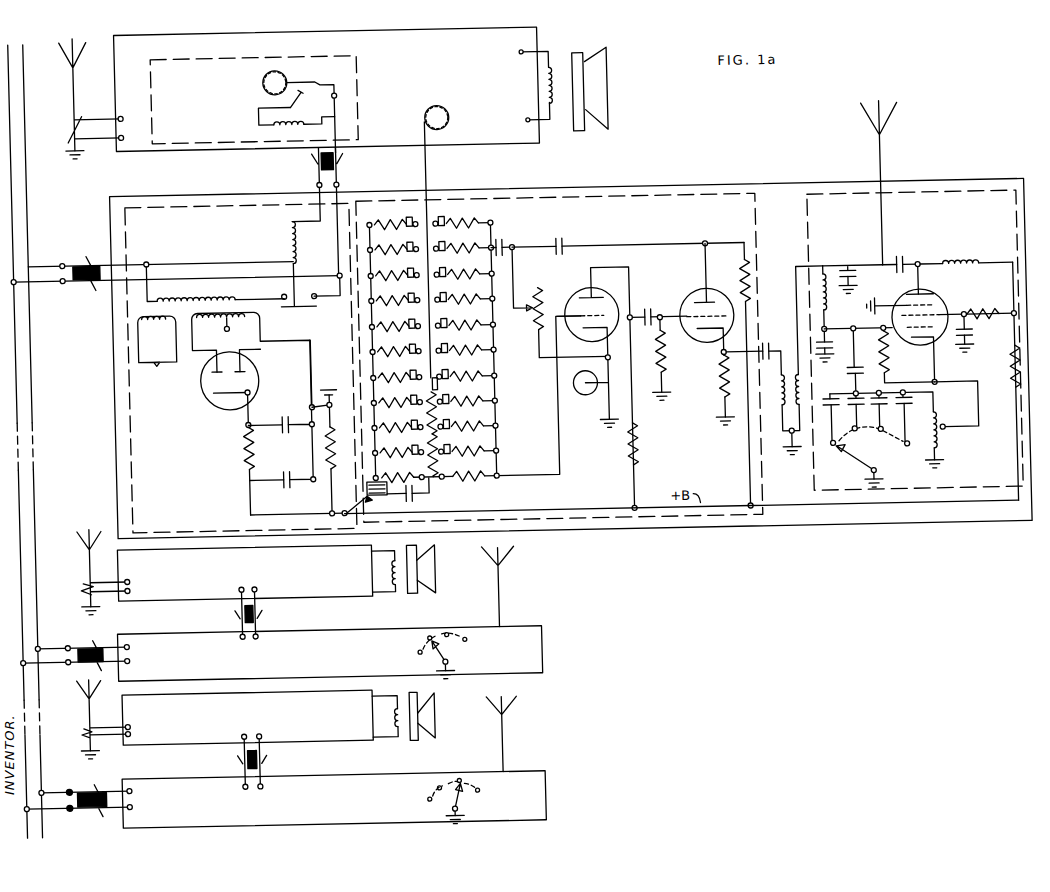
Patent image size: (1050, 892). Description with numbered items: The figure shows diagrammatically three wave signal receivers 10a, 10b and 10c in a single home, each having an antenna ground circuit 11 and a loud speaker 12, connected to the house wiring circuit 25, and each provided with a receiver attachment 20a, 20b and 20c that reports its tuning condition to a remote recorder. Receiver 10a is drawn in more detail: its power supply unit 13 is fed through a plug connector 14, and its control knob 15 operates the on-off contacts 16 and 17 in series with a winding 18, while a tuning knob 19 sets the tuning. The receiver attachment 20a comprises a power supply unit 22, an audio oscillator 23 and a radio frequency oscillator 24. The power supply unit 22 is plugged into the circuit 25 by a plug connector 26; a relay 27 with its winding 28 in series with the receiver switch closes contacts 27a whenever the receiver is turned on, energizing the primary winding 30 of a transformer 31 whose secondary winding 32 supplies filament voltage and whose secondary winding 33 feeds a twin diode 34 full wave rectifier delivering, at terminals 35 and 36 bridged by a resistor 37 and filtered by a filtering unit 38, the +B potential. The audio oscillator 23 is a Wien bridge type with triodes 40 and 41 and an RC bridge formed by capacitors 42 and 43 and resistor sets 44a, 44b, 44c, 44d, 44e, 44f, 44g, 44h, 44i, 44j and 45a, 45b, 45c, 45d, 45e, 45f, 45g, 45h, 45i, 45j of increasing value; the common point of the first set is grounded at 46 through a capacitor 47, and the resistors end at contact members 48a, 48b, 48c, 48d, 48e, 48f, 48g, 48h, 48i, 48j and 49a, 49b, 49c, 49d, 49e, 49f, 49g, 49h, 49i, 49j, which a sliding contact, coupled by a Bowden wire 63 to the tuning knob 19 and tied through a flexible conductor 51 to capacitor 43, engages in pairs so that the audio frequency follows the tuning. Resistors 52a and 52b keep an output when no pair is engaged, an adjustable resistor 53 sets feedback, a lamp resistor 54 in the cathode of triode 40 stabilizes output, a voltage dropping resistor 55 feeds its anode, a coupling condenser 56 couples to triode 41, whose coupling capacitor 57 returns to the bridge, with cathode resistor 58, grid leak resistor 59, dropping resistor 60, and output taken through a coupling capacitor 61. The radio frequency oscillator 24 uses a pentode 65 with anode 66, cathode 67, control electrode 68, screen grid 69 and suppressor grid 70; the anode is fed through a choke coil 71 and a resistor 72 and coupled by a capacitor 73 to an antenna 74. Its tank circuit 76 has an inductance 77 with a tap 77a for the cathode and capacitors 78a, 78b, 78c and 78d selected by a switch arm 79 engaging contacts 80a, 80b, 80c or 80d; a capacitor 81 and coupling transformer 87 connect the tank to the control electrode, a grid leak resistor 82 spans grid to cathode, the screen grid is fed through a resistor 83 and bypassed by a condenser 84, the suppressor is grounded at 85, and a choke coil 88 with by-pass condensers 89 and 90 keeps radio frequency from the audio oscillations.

The wave signal receiver 10a is at (536, 46).
The wave signal receiver 10b is at (116, 545).
The wave signal receiver 10c is at (115, 694).
The antenna ground circuit 11 is at (80, 128).
The loud speaker 12 is at (608, 50).
The power supply unit 13 is at (159, 58).
The plug connector 14 is at (346, 169).
The control knob 15 is at (274, 86).
The contact 16 is at (297, 77).
The contact 17 is at (308, 91).
The winding 18 is at (282, 120).
The tuning knob 19 is at (434, 121).
The receiver attachment 20a is at (673, 182).
The receiver attachment 20b is at (366, 634).
The receiver attachment 20c is at (372, 783).
The power supply unit 22 is at (116, 218).
The audio oscillator 23 is at (741, 186).
The oscillator 24 is at (911, 193).
The house wiring circuit 25 is at (19, 358).
The plug connector 26 is at (89, 280).
The relay 27 is at (294, 222).
The contacts 27a is at (318, 292).
The winding 28 is at (310, 245).
The primary winding 30 is at (239, 292).
The transformer 31 is at (149, 298).
The secondary winding 32 is at (160, 324).
The secondary winding 33 is at (234, 325).
The twin diode 34 is at (258, 377).
The terminal 35 is at (311, 402).
The terminal 36 is at (329, 508).
The resistor 37 is at (327, 446).
The filtering unit 38 is at (248, 474).
The triode 40 is at (595, 273).
The triode 41 is at (706, 267).
The capacitor 42 is at (514, 243).
The capacitor 43 is at (428, 491).
The resistor 44a is at (387, 220).
The resistor 44b is at (387, 245).
The resistor 44c is at (388, 271).
The resistor 44d is at (388, 296).
The resistor 44e is at (389, 322).
The resistor 44f is at (390, 347).
The resistor 44g is at (390, 373).
The resistor 44h is at (391, 398).
The resistor 44i is at (392, 423).
The resistor 44j is at (392, 448).
The resistor 45a is at (469, 219).
The resistor 45b is at (470, 244).
The resistor 45c is at (470, 270).
The resistor 45d is at (471, 295).
The resistor 45e is at (472, 321).
The resistor 45f is at (472, 346).
The resistor 45g is at (473, 372).
The resistor 45h is at (474, 397).
The resistor 45i is at (474, 422).
The resistor 45j is at (475, 447).
The ground 46 is at (350, 506).
The capacitor 47 is at (378, 498).
The contact member 48a is at (406, 219).
The contact member 48b is at (407, 244).
The contact member 48c is at (407, 270).
The contact member 48d is at (408, 295).
The contact member 48e is at (409, 321).
The contact member 48f is at (409, 346).
The contact member 48g is at (410, 372).
The contact member 48h is at (411, 397).
The contact member 48i is at (411, 422).
The contact member 48j is at (412, 447).
The contact member 49a is at (444, 218).
The contact member 49b is at (444, 243).
The contact member 49c is at (445, 269).
The contact member 49d is at (445, 294).
The contact member 49e is at (446, 320).
The contact member 49f is at (446, 345).
The contact member 49g is at (447, 371).
The contact member 49h is at (448, 396).
The contact member 49i is at (447, 421).
The contact member 49j is at (447, 446).
The flexible conductor 51 is at (437, 466).
The resistor 52a is at (413, 471).
The resistor 52b is at (510, 399).
The adjustable resistor 53 is at (543, 286).
The resistor 54 is at (585, 395).
The voltage dropping resistor 55 is at (638, 429).
The coupling condenser 56 is at (648, 316).
The coupling capacitor 57 is at (569, 242).
The resistor 58 is at (725, 385).
The resistor 59 is at (665, 369).
The voltage dropping resistor 60 is at (748, 275).
The coupling capacitor 61 is at (767, 348).
The Bowden wire 63 is at (432, 157).
The pentode 65 is at (925, 303).
The anode 66 is at (911, 300).
The cathode 67 is at (936, 377).
The control electrode 68 is at (946, 324).
The screen grid 69 is at (942, 322).
The suppressor grid 70 is at (908, 312).
The radio frequency choke coil 71 is at (964, 271).
The voltage dropping resistor 72 is at (1014, 360).
The coupling capacitor 73 is at (907, 271).
The antenna 74 is at (896, 142).
The tank circuit 76 is at (882, 435).
The inductance 77 is at (939, 420).
The tap 77a is at (945, 448).
The capacitor 78a is at (838, 417).
The capacitor 78b is at (862, 410).
The capacitor 78c is at (884, 411).
The capacitor 78d is at (909, 418).
The adjustable switch 79 is at (867, 480).
The contact 80a is at (826, 456).
The contact 80b is at (463, 653).
The contact 80c is at (474, 806).
The contact 80d is at (904, 455).
The capacitor 81 is at (861, 359).
The grid leak resistor 82 is at (890, 367).
The voltage dropping resistor 83 is at (994, 322).
The by-pass condenser 84 is at (973, 343).
The ground 85 is at (858, 308).
The coupling transformer 87 is at (784, 373).
The radio frequency choke coil 88 is at (826, 272).
The by pass condenser 89 is at (854, 278).
The by pass condenser 90 is at (825, 352).